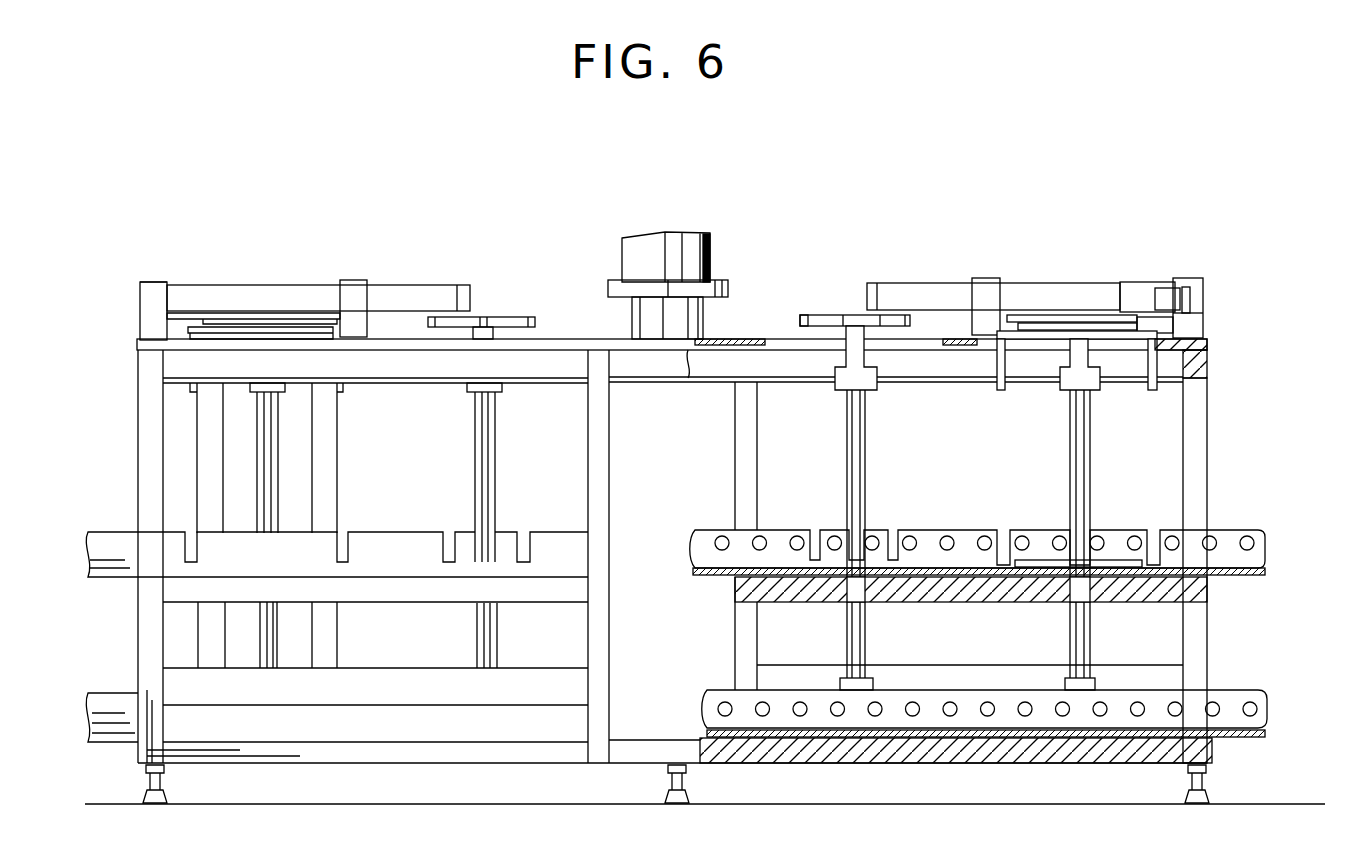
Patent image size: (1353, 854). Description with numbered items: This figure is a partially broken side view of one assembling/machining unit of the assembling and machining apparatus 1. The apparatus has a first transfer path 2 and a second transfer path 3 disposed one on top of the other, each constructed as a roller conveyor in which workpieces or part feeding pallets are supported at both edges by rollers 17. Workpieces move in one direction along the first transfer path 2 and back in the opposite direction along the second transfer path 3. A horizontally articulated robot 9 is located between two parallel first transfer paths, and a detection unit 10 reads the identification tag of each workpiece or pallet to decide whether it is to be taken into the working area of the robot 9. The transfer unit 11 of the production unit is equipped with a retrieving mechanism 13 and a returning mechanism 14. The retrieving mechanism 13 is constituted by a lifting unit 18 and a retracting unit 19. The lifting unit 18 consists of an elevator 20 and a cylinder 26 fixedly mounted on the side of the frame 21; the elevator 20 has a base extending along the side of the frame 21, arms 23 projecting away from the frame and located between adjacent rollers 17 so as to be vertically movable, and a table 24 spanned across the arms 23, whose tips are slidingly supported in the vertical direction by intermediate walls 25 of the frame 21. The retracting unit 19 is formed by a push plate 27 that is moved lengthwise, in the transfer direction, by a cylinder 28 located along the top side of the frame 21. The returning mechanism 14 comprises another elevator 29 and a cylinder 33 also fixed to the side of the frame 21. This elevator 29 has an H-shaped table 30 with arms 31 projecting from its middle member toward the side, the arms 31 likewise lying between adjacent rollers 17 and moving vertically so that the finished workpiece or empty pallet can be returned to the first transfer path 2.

The assembling and machining apparatus 1 is at (1233, 168).
The first transfer path 2 is at (1266, 544).
The second transfer path 3 is at (1268, 706).
The robot 9 is at (709, 254).
The detection unit 10 is at (1045, 561).
The transfer unit 11 is at (302, 256).
The retrieving mechanism 13 is at (210, 214).
The returning mechanism 14 is at (509, 315).
The rollers 17 is at (797, 536).
The lifting unit 18 is at (186, 332).
The retracting unit 19 is at (161, 279).
The elevator 20 is at (992, 330).
The frame 21 is at (1207, 419).
The arms 23 is at (998, 350).
The table 24 is at (1032, 318).
The intermediate walls 25 is at (208, 432).
The cylinder 26 is at (272, 467).
The push plate 27 is at (1182, 286).
The cylinder 28 is at (407, 292).
The elevator 29 is at (803, 316).
The H-shaped table 30 is at (834, 316).
The arms 31 is at (860, 328).
The cylinder 33 is at (476, 640).